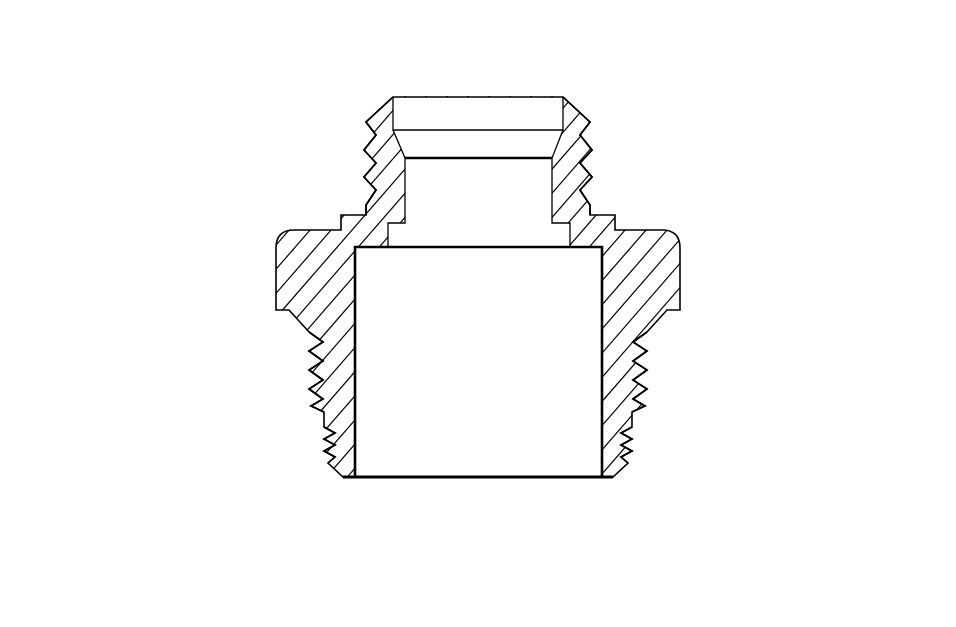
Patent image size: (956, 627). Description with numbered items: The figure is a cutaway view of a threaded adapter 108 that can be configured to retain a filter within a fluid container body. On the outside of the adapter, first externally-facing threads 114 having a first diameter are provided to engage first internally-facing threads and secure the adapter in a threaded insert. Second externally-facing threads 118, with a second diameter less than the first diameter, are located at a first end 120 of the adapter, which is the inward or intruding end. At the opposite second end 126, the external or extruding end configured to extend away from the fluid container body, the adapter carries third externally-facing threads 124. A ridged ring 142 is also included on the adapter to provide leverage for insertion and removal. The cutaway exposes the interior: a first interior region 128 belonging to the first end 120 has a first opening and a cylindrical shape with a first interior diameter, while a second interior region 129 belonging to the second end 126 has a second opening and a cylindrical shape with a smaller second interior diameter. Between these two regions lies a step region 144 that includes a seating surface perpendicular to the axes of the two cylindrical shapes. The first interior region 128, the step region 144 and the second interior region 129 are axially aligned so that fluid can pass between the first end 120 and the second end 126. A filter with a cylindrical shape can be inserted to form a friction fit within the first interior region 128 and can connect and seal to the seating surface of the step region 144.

The threaded adapter 108 is at (478, 313).
The third externally-facing threads 124 is at (348, 161).
The second end 126 is at (638, 90).
The second interior region 129 is at (512, 213).
The ridged ring 142 is at (243, 284).
The step region 144 is at (478, 260).
The first externally-facing threads 114 is at (306, 371).
The second externally-facing threads 118 is at (320, 451).
The first interior region 128 is at (532, 458).
The first end 120 is at (676, 333).